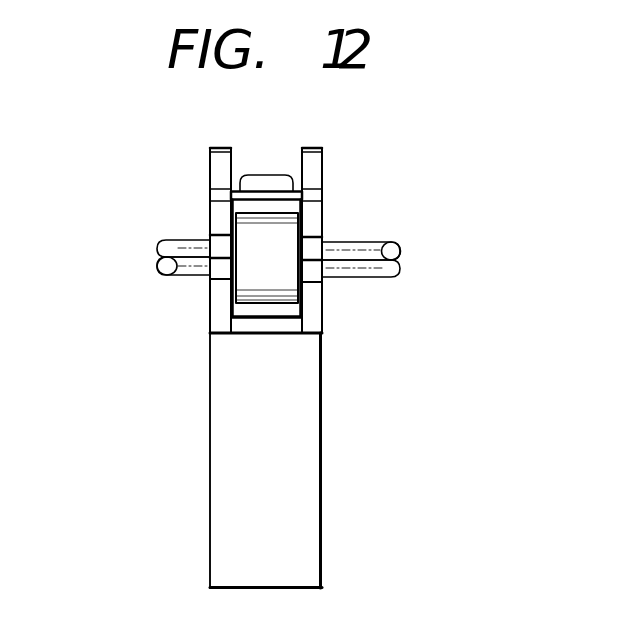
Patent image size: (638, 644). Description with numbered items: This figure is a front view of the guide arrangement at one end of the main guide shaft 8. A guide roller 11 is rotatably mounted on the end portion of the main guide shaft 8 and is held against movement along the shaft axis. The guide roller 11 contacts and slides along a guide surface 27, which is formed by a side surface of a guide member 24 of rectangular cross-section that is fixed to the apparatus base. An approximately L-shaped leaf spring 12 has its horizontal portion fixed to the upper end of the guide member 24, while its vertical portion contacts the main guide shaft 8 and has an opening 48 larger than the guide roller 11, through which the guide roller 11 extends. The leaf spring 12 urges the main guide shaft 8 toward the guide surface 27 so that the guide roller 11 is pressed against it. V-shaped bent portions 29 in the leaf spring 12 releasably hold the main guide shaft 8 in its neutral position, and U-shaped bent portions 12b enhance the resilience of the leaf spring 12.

The main guide shaft 8 is at (172, 253).
The guide roller 11 is at (290, 224).
The leaf spring 12 is at (313, 175).
The U-shaped bent portion 12b is at (216, 148).
The guide member 24 is at (333, 435).
The guide surface 27 is at (303, 508).
The V-shaped bent portion 29 is at (218, 246).
The opening 48 is at (305, 304).